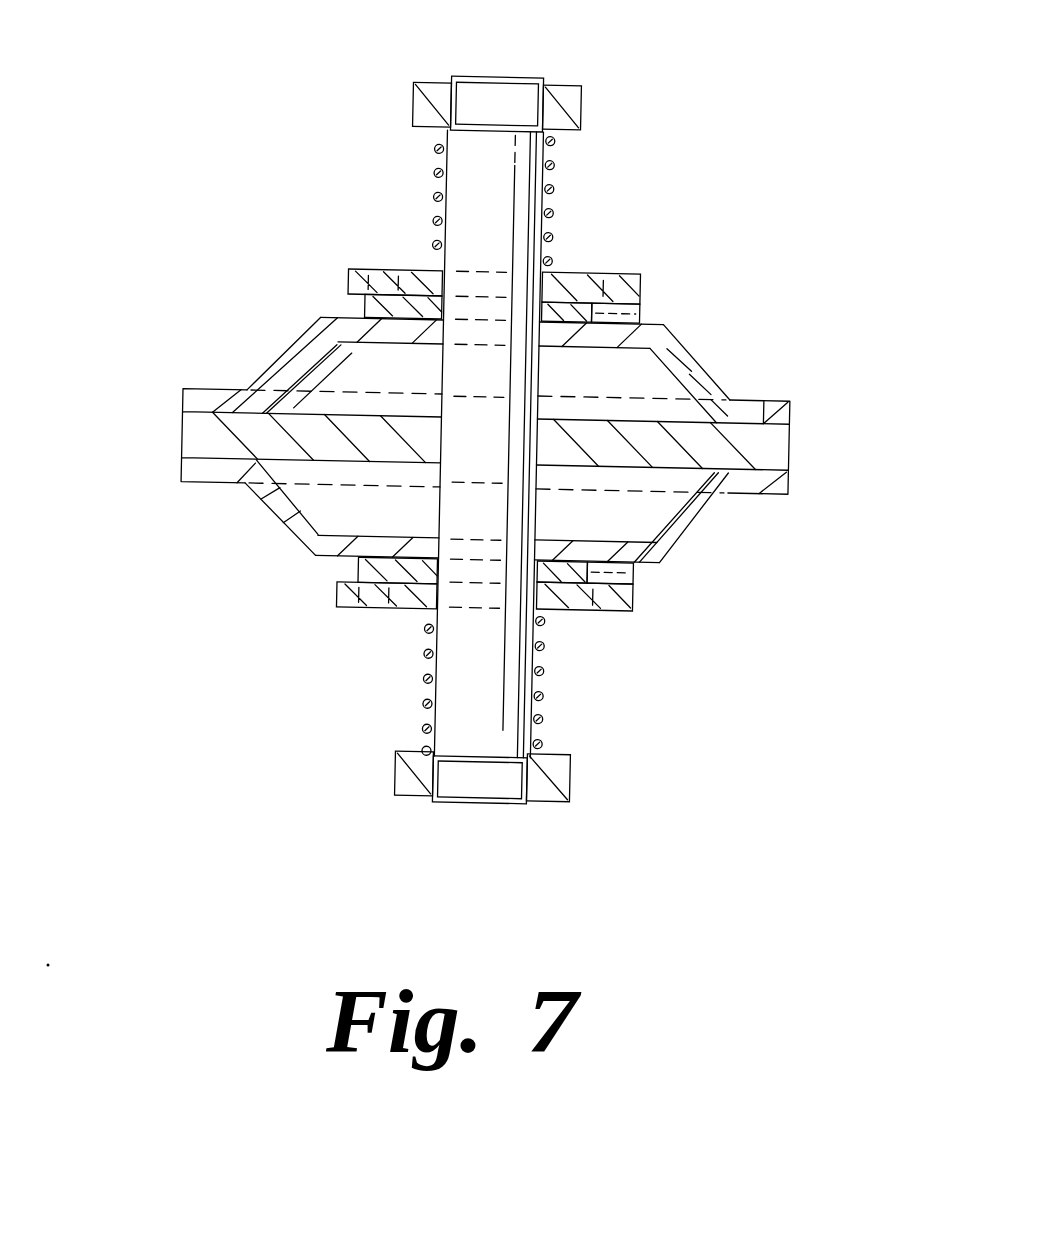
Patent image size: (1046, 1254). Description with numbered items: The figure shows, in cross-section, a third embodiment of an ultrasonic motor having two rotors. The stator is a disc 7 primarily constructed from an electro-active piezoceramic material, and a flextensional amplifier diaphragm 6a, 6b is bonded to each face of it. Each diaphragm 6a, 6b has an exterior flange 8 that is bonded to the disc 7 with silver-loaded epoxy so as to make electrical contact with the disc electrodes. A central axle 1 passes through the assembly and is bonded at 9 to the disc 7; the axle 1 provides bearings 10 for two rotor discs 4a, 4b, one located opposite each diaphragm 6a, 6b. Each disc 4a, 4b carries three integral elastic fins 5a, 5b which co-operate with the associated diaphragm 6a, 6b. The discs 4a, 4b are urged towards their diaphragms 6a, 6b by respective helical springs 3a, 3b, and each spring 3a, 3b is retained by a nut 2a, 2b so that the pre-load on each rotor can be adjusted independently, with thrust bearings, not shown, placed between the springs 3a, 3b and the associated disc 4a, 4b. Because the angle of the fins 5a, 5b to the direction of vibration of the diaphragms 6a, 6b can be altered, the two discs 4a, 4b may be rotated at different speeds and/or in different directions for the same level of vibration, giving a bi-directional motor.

The axle 1 is at (516, 78).
The nut 2a is at (583, 111).
The nut 2b is at (575, 778).
The helical spring 3a is at (553, 188).
The helical spring 3b is at (424, 684).
The disc 4a is at (345, 280).
The disc 4b is at (598, 611).
The elastic fins 5a is at (640, 307).
The elastic fins 5b is at (633, 576).
The flextensional amplifier diaphragm 6a is at (697, 517).
The flextensional amplifier diaphragm 6b is at (696, 362).
The disc 7 is at (205, 433).
The exterior flange 8 is at (771, 411).
The bond 9 is at (440, 497).
The bearings 10 is at (463, 262).